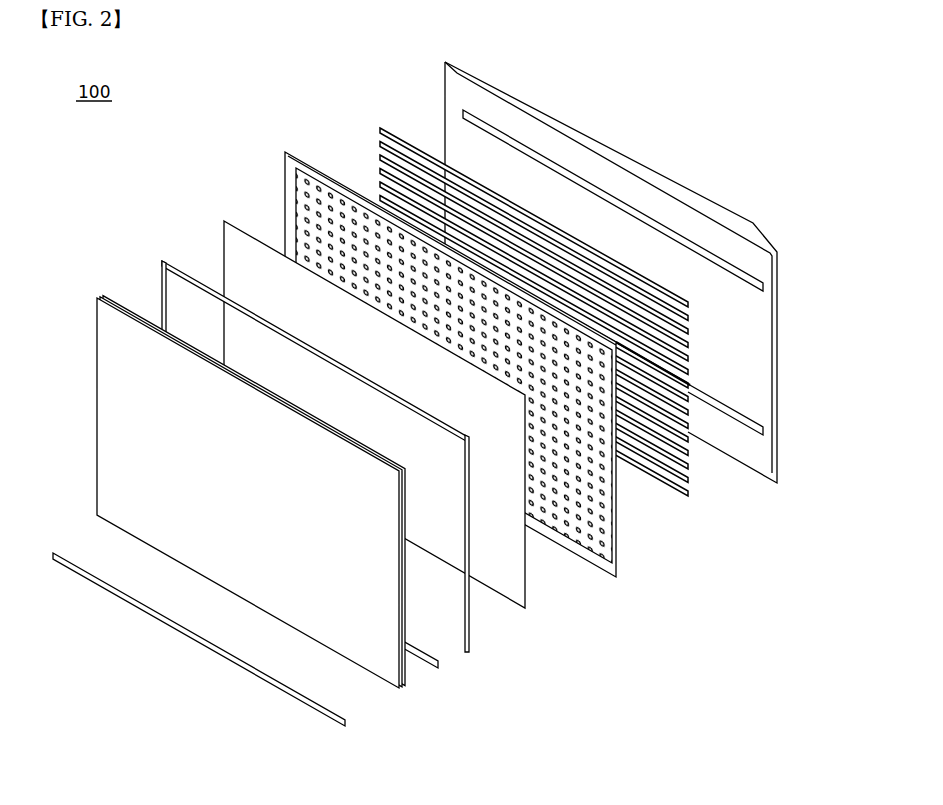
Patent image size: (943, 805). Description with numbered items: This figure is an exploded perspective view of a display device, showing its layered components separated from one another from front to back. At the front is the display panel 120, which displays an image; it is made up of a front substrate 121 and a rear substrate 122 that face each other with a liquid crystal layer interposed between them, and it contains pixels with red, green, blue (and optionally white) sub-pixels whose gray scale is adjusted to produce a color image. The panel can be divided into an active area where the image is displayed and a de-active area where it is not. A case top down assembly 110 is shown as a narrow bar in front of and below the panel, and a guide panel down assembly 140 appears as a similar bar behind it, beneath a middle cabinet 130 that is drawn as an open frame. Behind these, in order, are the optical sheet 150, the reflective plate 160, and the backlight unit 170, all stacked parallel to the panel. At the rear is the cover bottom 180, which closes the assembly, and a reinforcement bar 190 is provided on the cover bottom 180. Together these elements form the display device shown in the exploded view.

The case top down assembly 110 is at (346, 723).
The display panel 120 is at (284, 531).
The front substrate 121 is at (401, 690).
The rear substrate 122 is at (405, 688).
The middle cabinet 130 is at (468, 653).
The guide panel down assembly 140 is at (439, 666).
The optical sheet 150 is at (527, 609).
The reflective plate 160 is at (617, 578).
The backlight unit 170 is at (690, 499).
The cover bottom 180 is at (778, 485).
The reinforcement bar 190 is at (764, 286).